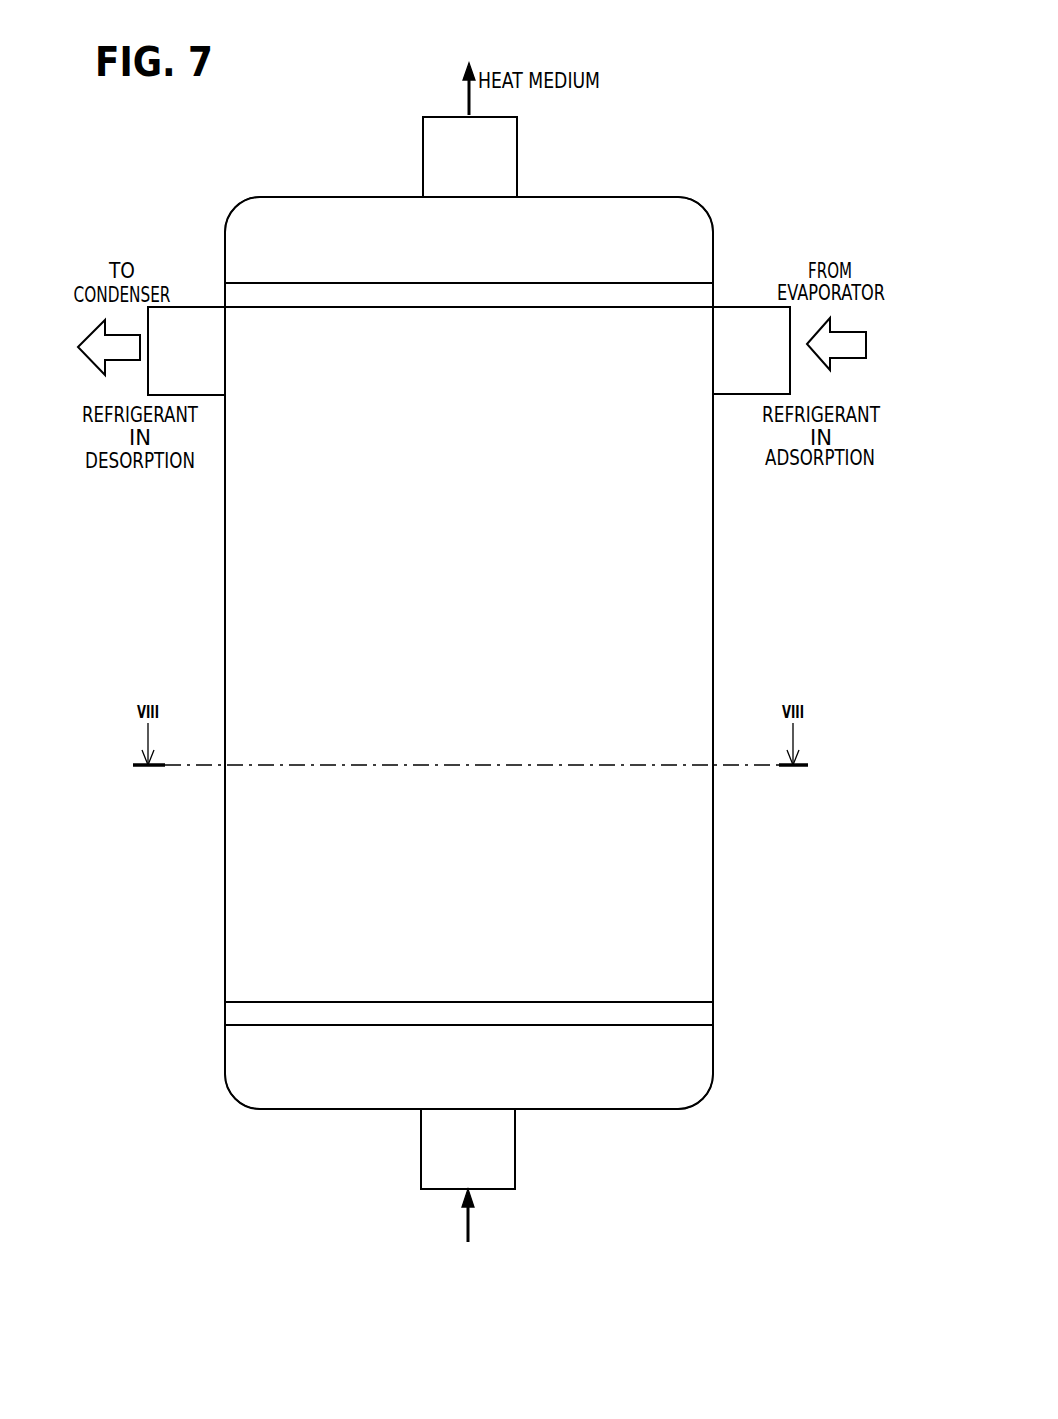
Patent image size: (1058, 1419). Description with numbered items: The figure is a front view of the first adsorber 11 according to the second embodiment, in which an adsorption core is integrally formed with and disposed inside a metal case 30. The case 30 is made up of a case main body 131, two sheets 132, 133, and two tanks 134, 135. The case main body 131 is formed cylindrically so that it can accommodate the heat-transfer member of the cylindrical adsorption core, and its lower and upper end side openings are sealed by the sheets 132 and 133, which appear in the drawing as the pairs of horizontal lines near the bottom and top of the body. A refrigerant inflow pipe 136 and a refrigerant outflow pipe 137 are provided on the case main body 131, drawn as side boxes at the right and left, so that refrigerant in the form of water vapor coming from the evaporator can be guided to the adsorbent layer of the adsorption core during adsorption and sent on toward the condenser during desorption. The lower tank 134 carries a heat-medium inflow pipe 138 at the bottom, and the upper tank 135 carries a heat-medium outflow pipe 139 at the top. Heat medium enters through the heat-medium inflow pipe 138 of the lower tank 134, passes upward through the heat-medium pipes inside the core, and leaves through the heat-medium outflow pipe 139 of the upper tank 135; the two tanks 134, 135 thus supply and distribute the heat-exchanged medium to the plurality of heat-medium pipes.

The first adsorber 11 is at (784, 163).
The case 30 is at (713, 601).
The case main body 131 is at (713, 652).
The sheet 132 is at (644, 1017).
The sheet 133 is at (603, 295).
The lower tank 134 is at (283, 1080).
The upper tank 135 is at (285, 238).
The refrigerant inflow pipe 136 is at (748, 333).
The refrigerant outflow pipe 137 is at (185, 332).
The heat-medium inflow pipe 138 is at (494, 1145).
The heat-medium outflow pipe 139 is at (441, 162).